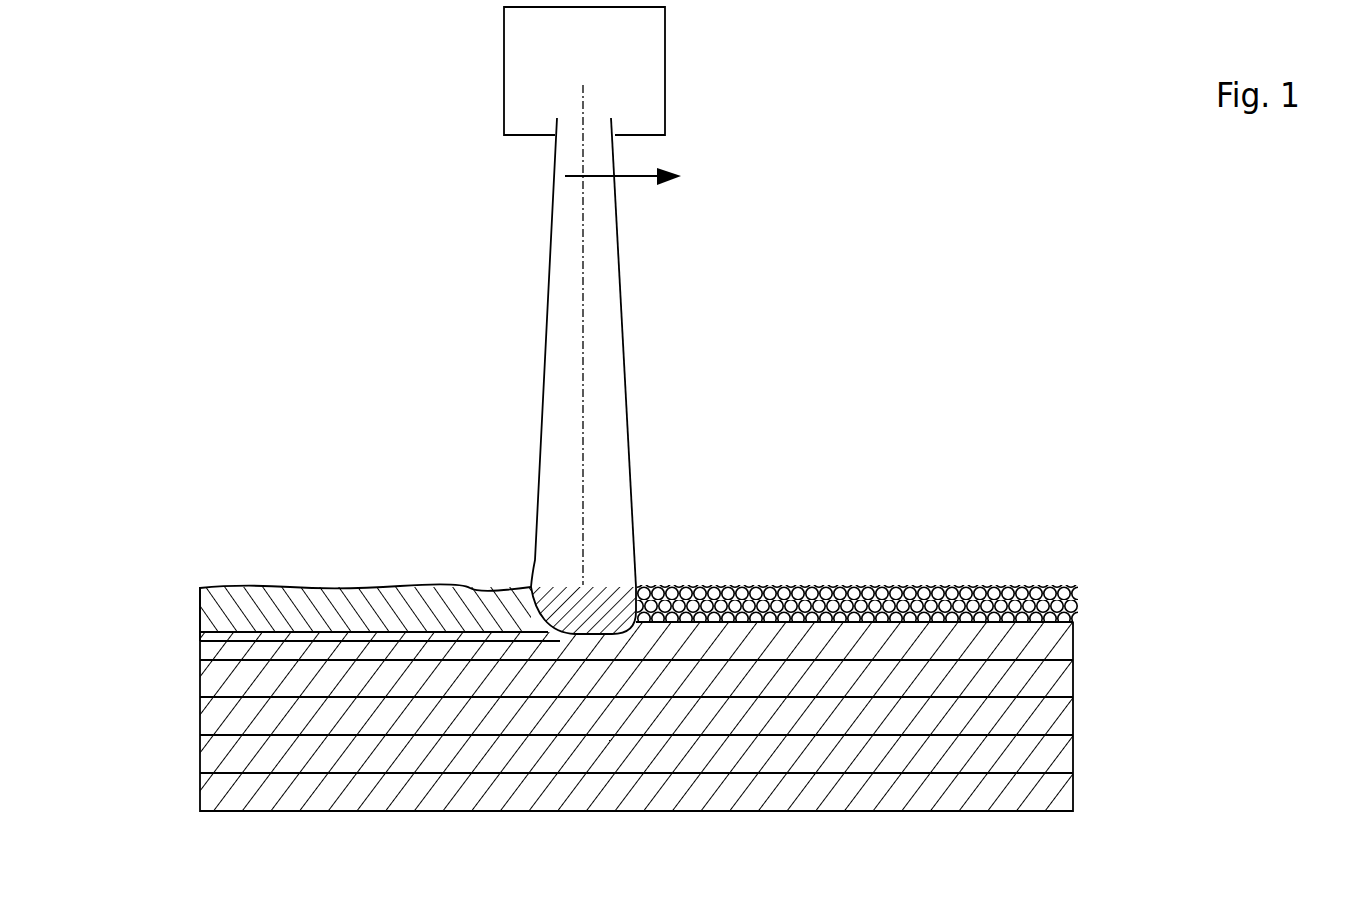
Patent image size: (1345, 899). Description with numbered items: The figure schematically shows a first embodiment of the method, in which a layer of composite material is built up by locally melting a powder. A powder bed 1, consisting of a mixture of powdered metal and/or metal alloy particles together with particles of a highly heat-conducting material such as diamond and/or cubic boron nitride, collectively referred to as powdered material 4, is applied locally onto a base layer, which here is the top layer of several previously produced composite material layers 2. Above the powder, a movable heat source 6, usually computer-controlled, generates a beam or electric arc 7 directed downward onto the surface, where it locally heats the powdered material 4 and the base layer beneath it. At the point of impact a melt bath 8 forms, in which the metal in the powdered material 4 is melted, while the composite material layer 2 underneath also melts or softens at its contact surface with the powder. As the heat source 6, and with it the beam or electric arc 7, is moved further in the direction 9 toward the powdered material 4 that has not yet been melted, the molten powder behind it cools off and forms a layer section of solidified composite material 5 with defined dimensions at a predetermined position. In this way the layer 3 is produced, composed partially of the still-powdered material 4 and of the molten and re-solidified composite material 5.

The powder bed 1 is at (1078, 590).
The composite material layers 2 is at (1073, 793).
The layer 3 is at (192, 610).
The powdered material 4 is at (873, 605).
The solidified composite material 5 is at (348, 593).
The heat source 6 is at (563, 296).
The beam or electric arc 7 is at (626, 380).
The melt bath 8 is at (560, 590).
The direction 9 is at (636, 167).